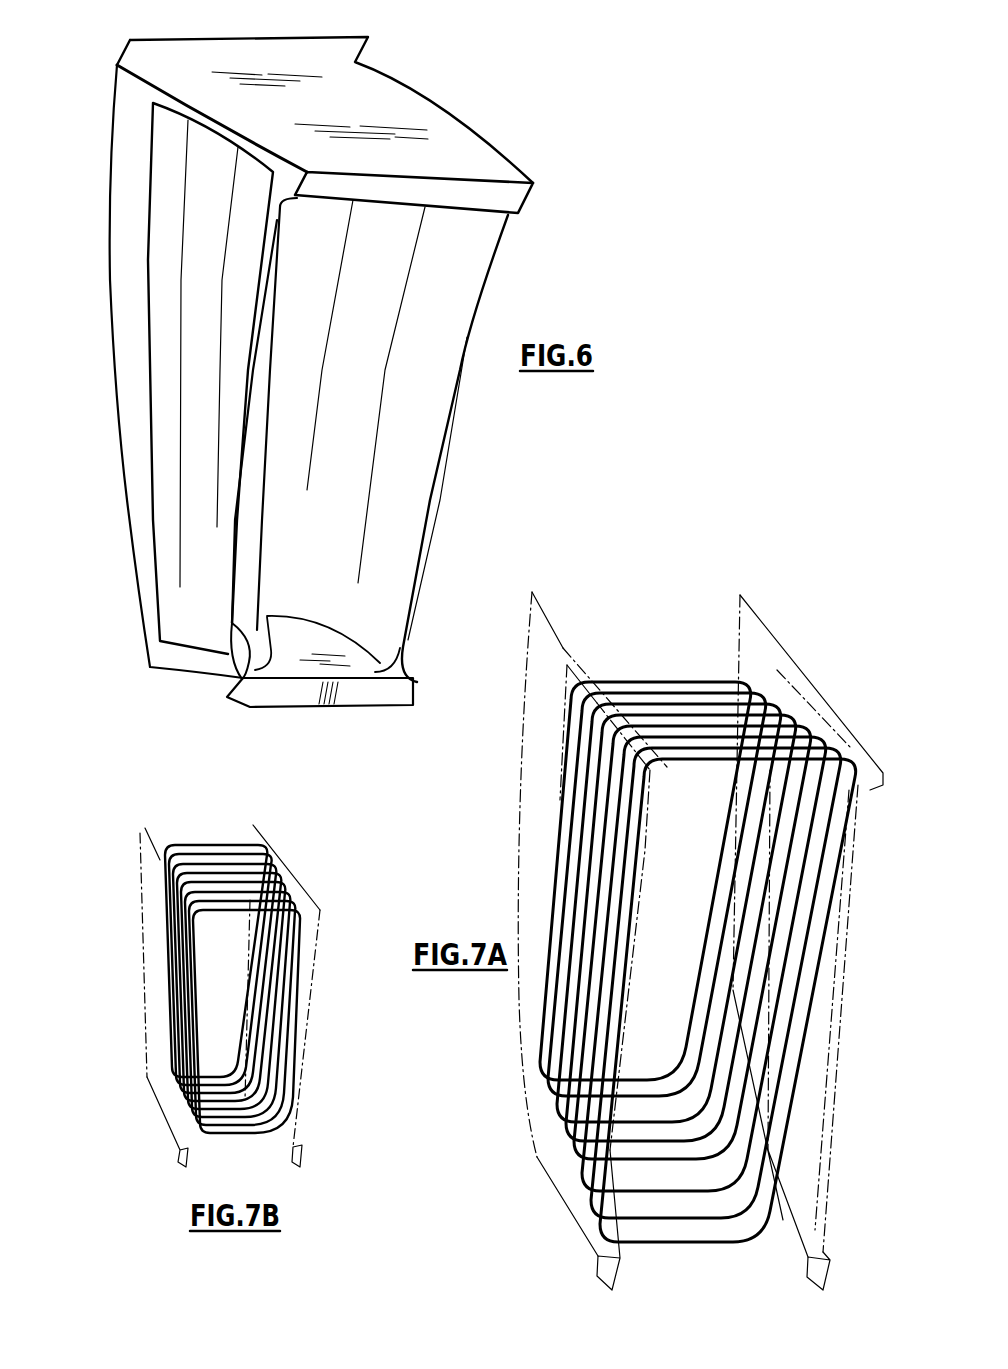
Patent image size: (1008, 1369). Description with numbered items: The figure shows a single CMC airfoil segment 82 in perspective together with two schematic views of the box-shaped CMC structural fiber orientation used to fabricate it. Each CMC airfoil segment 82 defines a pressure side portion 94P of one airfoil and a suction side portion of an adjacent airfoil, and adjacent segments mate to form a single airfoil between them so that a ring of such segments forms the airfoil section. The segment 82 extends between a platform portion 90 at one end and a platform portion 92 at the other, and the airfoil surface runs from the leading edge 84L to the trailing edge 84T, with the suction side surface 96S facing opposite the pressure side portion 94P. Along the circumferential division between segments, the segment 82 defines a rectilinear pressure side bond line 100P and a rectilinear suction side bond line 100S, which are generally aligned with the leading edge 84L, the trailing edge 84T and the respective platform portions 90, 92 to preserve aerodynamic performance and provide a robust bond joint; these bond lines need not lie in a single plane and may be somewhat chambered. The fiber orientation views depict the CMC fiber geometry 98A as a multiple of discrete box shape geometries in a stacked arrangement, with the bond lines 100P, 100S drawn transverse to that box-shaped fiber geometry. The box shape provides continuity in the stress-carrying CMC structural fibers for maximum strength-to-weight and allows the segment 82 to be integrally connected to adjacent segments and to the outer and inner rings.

In FIG. 6, the CMC airfoil segment 82 is at (496, 111).
In FIG. 6, the platform portion 92 is at (522, 210).
In FIG. 6, the rectilinear pressure side bond line 100P is at (133, 333).
In FIG. 7A, the rectilinear pressure side bond line 100P is at (563, 645).
In FIG. 7B, the rectilinear pressure side bond line 100P is at (152, 848).
In FIG. 6, the trailing edge 84T is at (113, 383).
In FIG. 6, the pressure side portion 94P is at (122, 570).
In FIG. 6, the leading edge 84L is at (410, 607).
In FIG. 6, the suction side 96S is at (462, 455).
In FIG. 6, the rectilinear suction side bond line 100S is at (410, 648).
In FIG. 7A, the rectilinear suction side bond line 100S is at (810, 700).
In FIG. 7B, the rectilinear suction side bond line 100S is at (295, 890).
In FIG. 6, the platform portion 90 is at (387, 698).
In FIG. 7A, the CMC fiber geometry 98A is at (734, 750).
In FIG. 7B, the CMC fiber geometry 98A is at (225, 1135).